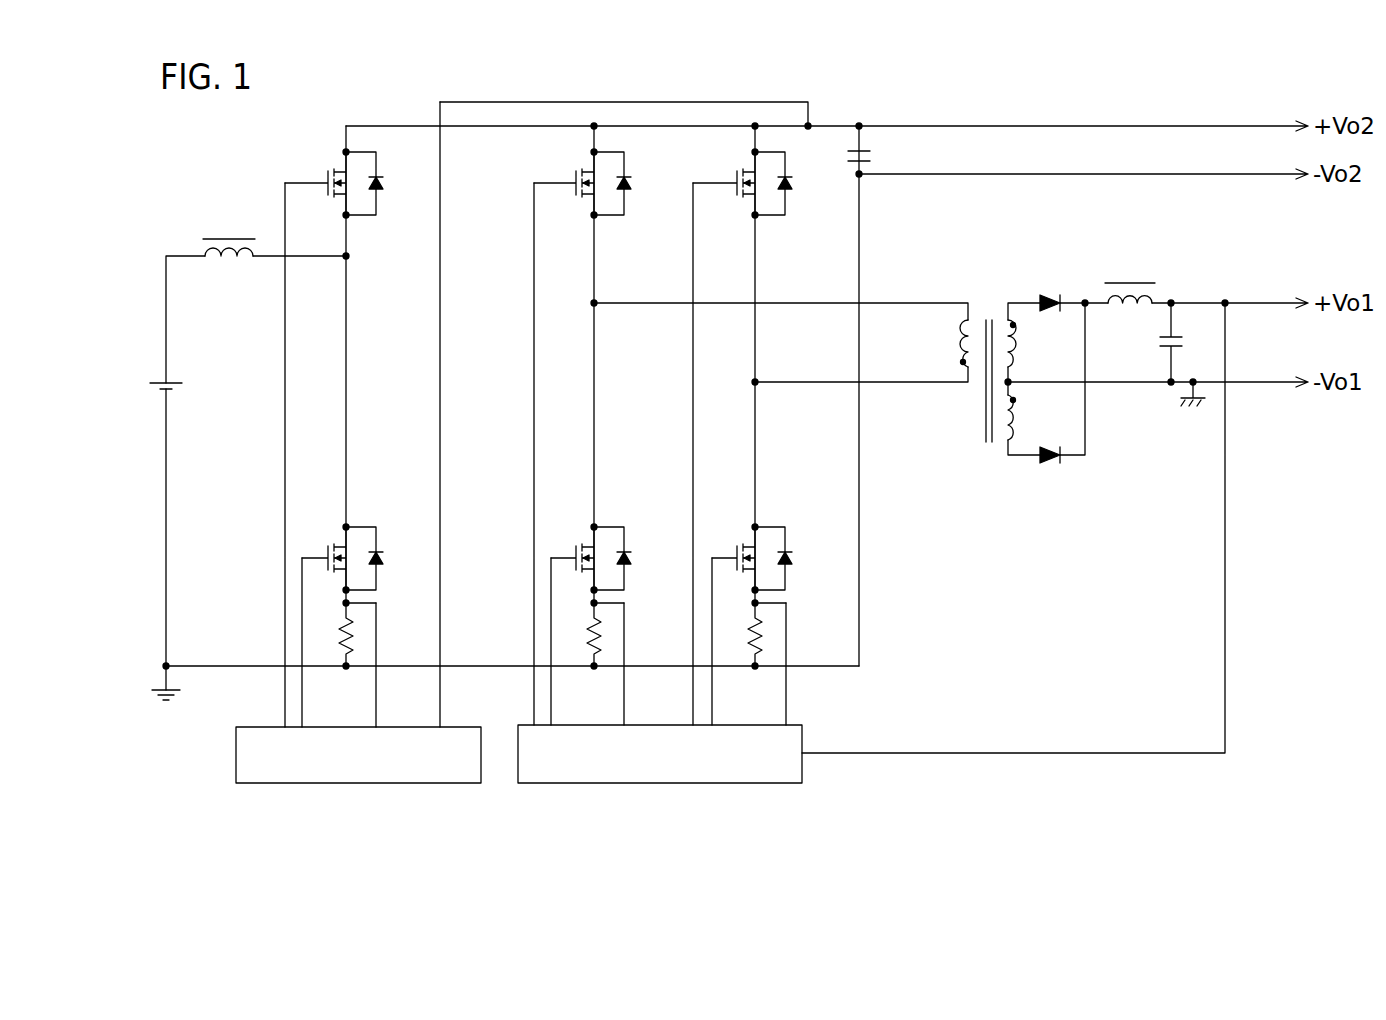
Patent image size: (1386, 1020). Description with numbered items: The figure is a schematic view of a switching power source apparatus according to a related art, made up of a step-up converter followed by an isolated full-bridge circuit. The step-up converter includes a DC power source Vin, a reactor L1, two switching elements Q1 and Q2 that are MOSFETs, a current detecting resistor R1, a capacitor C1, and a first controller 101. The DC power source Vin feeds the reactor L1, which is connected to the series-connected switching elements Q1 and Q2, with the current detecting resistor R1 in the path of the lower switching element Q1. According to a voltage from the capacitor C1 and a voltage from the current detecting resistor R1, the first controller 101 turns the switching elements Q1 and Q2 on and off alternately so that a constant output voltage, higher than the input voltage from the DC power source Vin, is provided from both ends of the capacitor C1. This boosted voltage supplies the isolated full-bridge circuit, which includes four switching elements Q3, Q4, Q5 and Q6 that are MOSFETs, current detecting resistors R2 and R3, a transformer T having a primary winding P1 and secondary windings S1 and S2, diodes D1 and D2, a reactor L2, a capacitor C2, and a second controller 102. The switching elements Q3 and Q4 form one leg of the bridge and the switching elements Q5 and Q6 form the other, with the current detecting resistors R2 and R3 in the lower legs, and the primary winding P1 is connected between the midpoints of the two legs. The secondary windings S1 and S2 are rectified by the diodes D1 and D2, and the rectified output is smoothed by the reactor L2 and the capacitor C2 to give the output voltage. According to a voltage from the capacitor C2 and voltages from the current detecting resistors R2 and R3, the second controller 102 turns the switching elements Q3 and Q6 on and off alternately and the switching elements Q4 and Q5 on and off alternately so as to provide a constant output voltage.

The first controller 101 is at (348, 783).
The second controller 102 is at (661, 783).
The switching element Q1 is at (342, 556).
The switching element Q2 is at (334, 179).
The switching element Q3 is at (582, 179).
The switching element Q4 is at (591, 556).
The switching element Q5 is at (742, 179).
The switching element Q6 is at (752, 556).
The current detecting resistor R1 is at (342, 633).
The current detecting resistor R2 is at (590, 633).
The current detecting resistor R3 is at (751, 633).
The reactor L1 is at (229, 232).
The reactor L2 is at (1130, 279).
The capacitor C1 is at (877, 158).
The capacitor C2 is at (1188, 342).
The diode D1 is at (1056, 288).
The diode D2 is at (1063, 441).
The transformer T is at (989, 357).
The primary winding P1 is at (949, 343).
The secondary winding S1 is at (1029, 343).
The secondary winding S2 is at (1029, 417).
The DC power source Vin is at (145, 384).